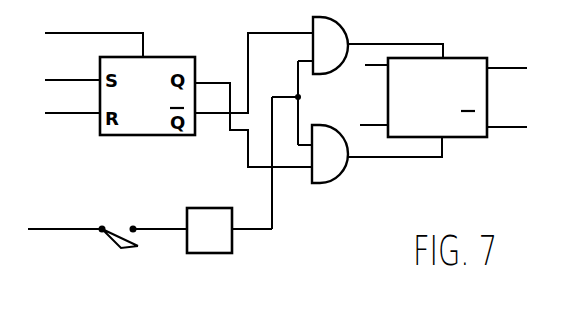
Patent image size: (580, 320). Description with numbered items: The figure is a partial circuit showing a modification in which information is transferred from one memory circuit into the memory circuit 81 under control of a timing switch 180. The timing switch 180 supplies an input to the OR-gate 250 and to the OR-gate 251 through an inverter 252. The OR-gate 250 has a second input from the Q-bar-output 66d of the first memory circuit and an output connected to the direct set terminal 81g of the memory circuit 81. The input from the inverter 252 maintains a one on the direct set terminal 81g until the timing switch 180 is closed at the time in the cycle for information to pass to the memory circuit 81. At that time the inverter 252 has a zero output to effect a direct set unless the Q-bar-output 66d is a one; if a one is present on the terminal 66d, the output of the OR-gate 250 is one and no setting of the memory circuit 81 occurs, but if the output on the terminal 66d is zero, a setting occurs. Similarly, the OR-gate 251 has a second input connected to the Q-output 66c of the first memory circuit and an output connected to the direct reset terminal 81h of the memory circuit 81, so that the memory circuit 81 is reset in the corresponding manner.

The Q-output 66c is at (214, 82).
The Q-bar-output 66d is at (211, 117).
The OR-gate 250 is at (321, 66).
The OR-gate 251 is at (330, 176).
The memory circuit 81 is at (478, 90).
The direct set terminal 81g is at (445, 50).
The direct reset terminal 81h is at (443, 147).
The timing switch 180 is at (118, 232).
The inverter 252 is at (221, 250).